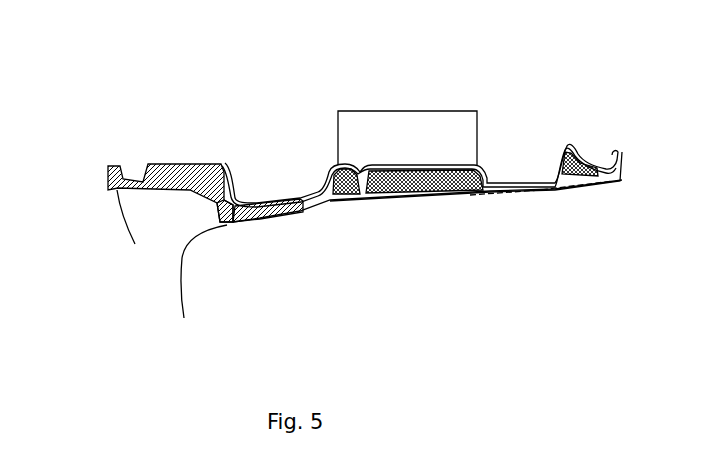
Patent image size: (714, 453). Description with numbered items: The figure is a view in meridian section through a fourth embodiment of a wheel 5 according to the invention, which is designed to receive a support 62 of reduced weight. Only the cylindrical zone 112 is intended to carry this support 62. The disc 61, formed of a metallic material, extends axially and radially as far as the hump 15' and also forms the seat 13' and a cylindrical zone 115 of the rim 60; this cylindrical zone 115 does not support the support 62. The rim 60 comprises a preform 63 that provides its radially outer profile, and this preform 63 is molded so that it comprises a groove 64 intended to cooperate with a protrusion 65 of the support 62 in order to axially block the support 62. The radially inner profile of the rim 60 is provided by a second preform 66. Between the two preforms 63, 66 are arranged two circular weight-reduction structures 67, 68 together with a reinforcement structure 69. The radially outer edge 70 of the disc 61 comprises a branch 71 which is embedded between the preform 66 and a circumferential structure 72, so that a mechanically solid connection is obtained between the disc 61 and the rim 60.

The wheel 5 is at (385, 272).
The seat 13' is at (165, 123).
The hump 15' is at (78, 123).
The rim 60 is at (311, 118).
The disc 61 is at (160, 253).
The support 62 is at (403, 140).
The preform 63 is at (591, 160).
The groove 64 is at (375, 168).
The protrusion 65 is at (358, 163).
The preform 66 is at (500, 188).
The circular weight-reduction structure 67 is at (432, 177).
The circular weight-reduction structure 68 is at (573, 167).
The reinforcement structure 69 is at (597, 176).
The radially outer edge 70 is at (213, 206).
The branch 71 is at (280, 215).
The circumferential structure 72 is at (263, 210).
The cylindrical zone 112 is at (460, 164).
The cylindrical zone 115 is at (203, 163).